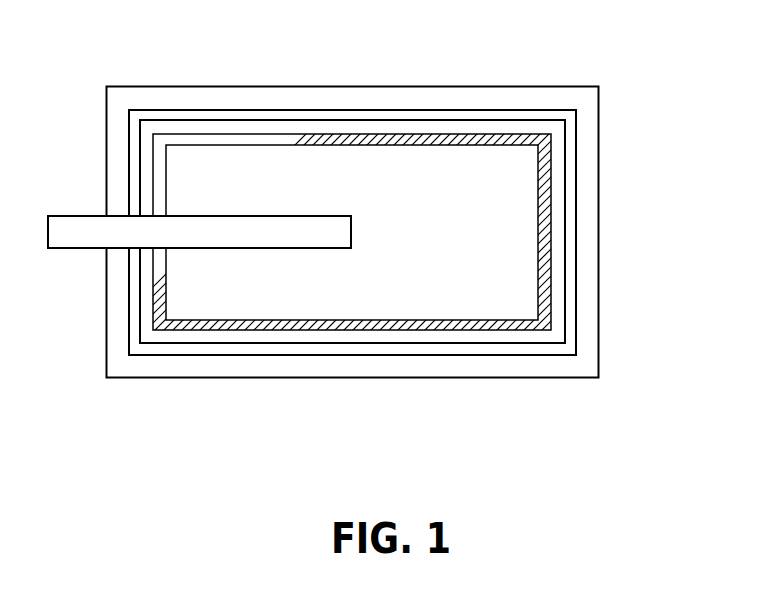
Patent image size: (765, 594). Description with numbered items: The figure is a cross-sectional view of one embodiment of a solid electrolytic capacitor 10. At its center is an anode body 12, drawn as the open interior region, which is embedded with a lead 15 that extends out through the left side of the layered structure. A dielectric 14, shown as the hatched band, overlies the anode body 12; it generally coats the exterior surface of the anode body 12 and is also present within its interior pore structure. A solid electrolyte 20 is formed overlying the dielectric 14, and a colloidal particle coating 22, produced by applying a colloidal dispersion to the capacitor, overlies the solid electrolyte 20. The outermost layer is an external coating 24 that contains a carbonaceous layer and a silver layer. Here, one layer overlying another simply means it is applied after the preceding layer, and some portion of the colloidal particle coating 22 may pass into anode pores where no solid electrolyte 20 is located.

The solid electrolytic capacitor 10 is at (680, 127).
The anode body 12 is at (454, 214).
The dielectric 14 is at (438, 323).
The lead 15 is at (297, 227).
The solid electrolyte 20 is at (423, 336).
The colloidal particle coating 22 is at (263, 347).
The external coating 24 is at (115, 359).